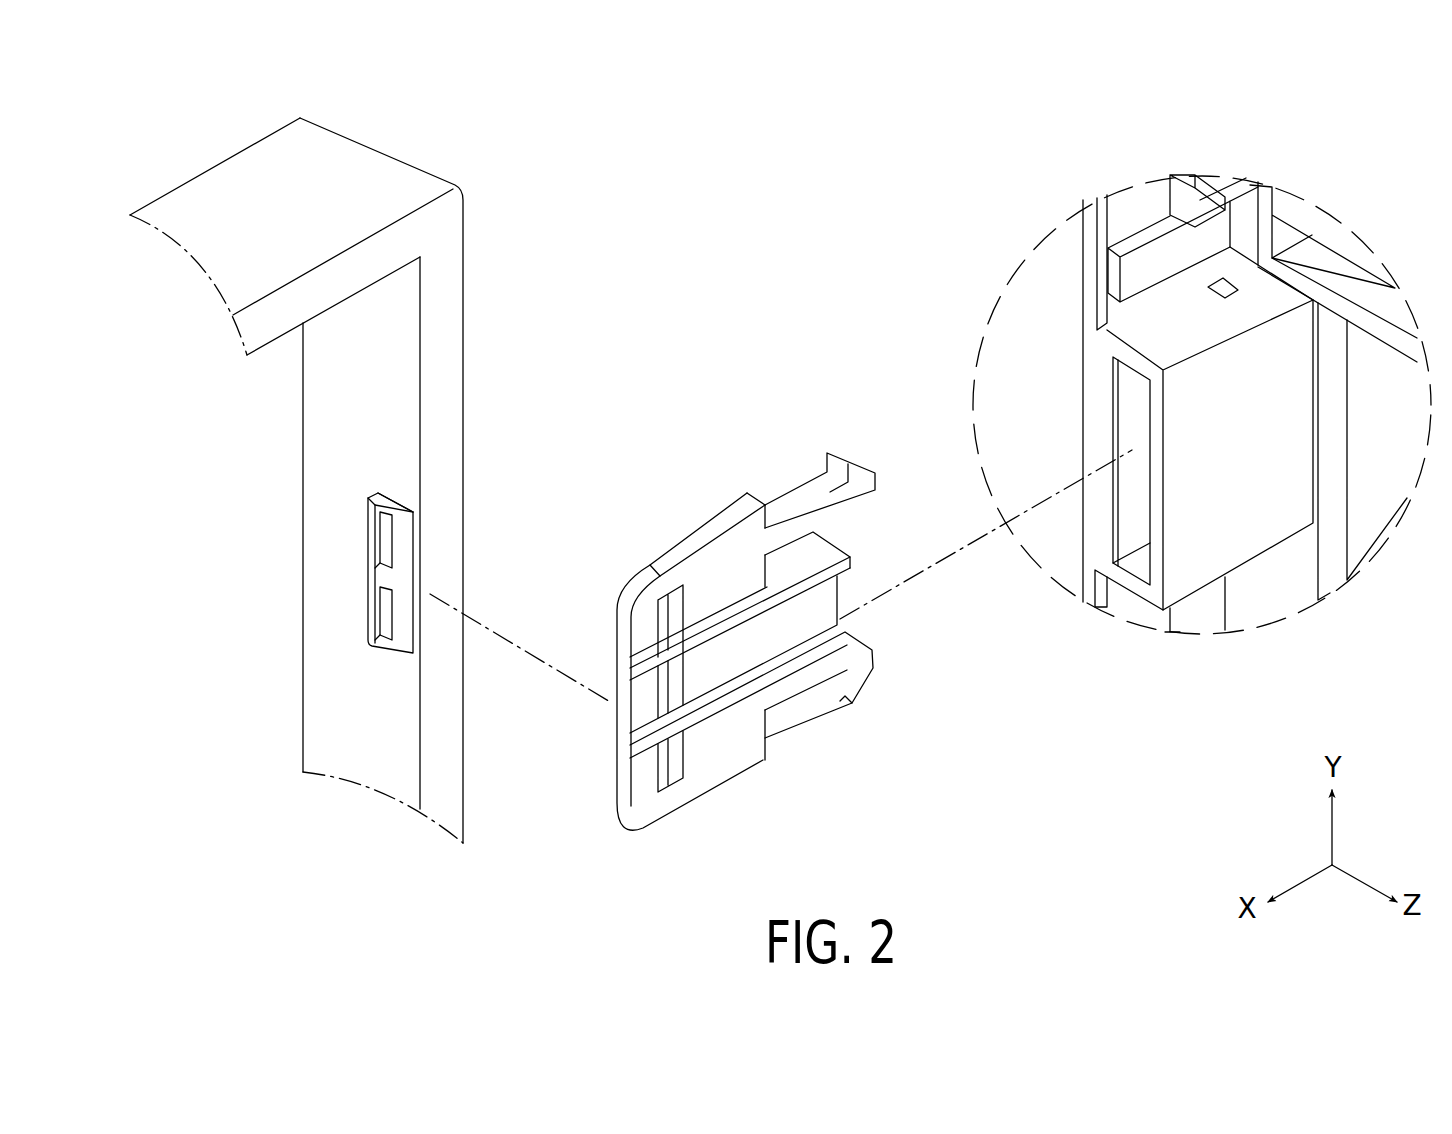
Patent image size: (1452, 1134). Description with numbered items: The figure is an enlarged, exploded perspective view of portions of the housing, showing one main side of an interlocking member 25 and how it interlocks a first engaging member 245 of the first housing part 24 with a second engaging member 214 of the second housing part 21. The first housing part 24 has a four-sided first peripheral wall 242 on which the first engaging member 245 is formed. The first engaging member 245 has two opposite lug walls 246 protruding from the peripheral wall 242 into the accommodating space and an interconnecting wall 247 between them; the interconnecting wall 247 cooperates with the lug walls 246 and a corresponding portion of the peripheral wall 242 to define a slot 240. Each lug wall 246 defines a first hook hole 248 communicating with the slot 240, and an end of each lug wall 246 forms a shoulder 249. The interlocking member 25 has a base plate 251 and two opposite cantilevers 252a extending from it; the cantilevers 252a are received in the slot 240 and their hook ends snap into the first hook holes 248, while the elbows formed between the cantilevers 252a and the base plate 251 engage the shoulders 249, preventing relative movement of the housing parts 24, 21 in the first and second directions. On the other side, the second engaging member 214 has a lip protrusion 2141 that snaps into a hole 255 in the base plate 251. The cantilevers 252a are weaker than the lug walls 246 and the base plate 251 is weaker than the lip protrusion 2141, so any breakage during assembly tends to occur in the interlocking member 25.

The second housing part 21 is at (484, 378).
The second engaging member 214 is at (358, 564).
The lip protrusion 2141 is at (388, 498).
The interlocking member 25 is at (748, 623).
The base plate 251 is at (670, 545).
The cantilever 252a is at (810, 515).
The hole 255 is at (671, 779).
The first housing part 24 is at (1174, 400).
The slot 240 is at (1133, 428).
The first peripheral wall 242 is at (1082, 460).
The first engaging member 245 is at (1246, 276).
The lug wall 246 is at (1147, 342).
The interconnecting wall 247 is at (1157, 488).
The first hook hole 248 is at (1212, 285).
The shoulder 249 is at (1132, 583).